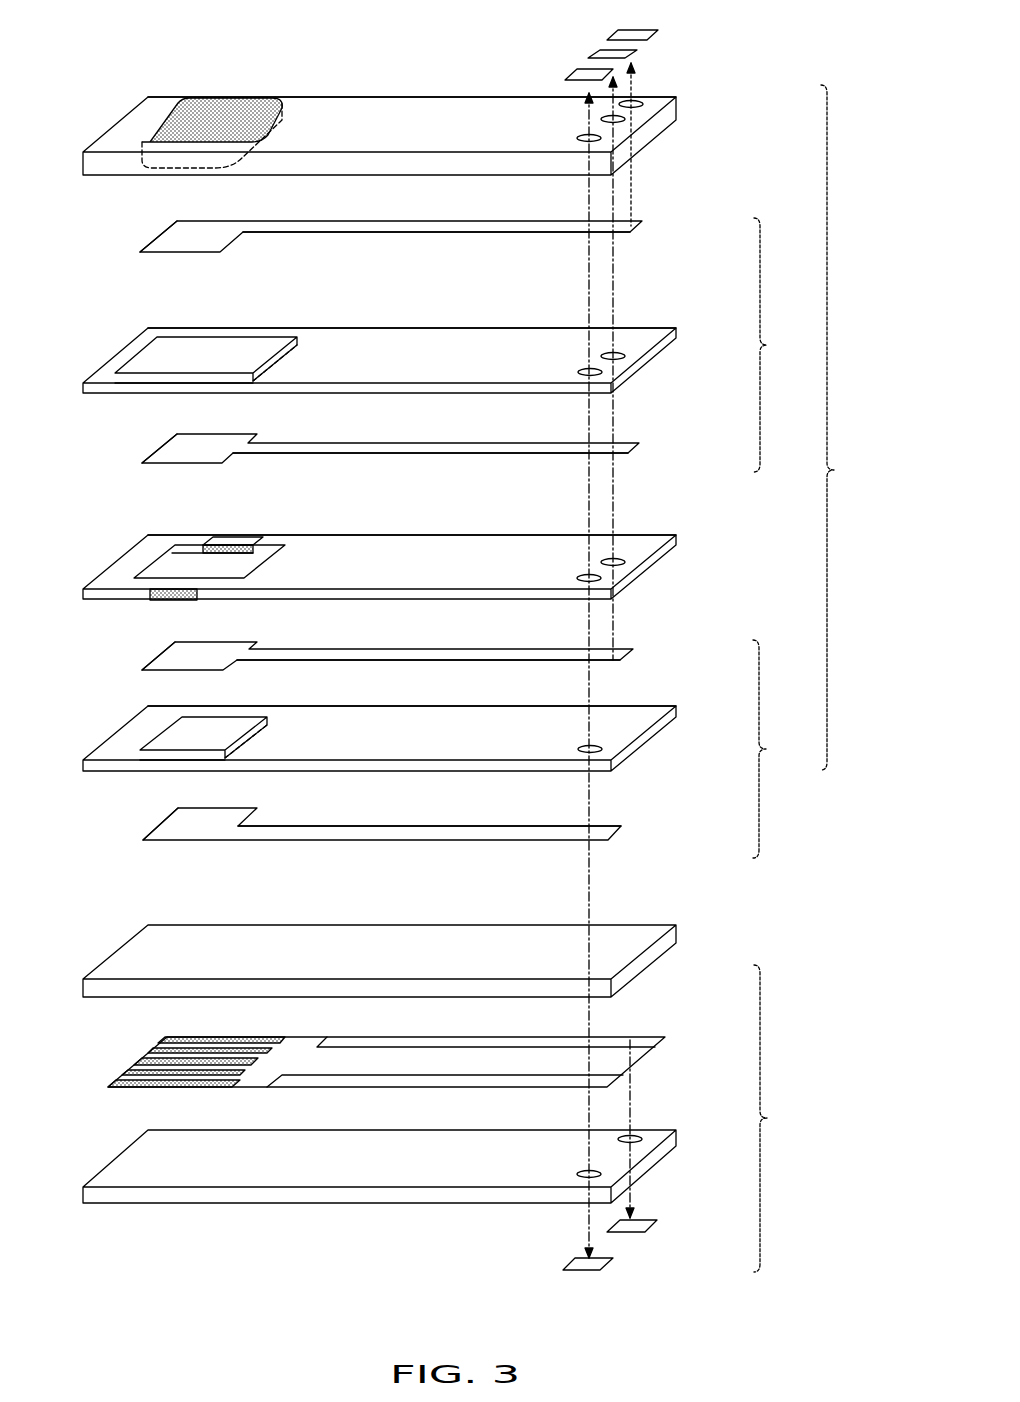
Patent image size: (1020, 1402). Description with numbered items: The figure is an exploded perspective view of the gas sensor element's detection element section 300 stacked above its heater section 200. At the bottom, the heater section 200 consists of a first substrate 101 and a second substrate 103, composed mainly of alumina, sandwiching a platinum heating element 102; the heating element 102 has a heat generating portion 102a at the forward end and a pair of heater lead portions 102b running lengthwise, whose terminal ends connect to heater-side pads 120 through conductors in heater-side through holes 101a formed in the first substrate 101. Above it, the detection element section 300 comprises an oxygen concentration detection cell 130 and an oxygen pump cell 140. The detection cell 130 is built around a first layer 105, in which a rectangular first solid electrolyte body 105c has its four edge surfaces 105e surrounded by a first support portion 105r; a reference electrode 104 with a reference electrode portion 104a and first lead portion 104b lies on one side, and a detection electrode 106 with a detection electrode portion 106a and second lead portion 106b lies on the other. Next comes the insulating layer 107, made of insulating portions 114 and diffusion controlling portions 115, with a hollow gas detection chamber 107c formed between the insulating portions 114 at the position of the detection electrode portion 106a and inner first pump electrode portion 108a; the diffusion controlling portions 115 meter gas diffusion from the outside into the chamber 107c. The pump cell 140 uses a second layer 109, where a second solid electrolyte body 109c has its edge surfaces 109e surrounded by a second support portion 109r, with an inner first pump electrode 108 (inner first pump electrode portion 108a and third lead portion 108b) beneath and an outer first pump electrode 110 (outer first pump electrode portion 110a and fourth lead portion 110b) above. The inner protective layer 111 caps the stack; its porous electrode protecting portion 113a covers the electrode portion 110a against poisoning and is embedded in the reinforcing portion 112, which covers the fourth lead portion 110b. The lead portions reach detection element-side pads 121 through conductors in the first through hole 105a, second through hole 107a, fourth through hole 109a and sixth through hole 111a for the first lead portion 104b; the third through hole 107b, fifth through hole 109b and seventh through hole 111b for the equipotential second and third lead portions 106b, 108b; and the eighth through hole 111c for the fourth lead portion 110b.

The first substrate 101 is at (671, 1186).
The heater-side through holes 101a is at (594, 1172).
The heating element 102 is at (671, 1067).
The heat generating portion 102a is at (150, 1055).
The heater lead portions 102b is at (422, 1080).
The second substrate 103 is at (673, 977).
The reference electrode 104 is at (644, 839).
The reference electrode portion 104a is at (152, 826).
The first lead portion 104b is at (430, 840).
The first layer 105 is at (675, 748).
The first through hole 105a is at (580, 752).
The first solid electrolyte body 105c is at (172, 735).
The edge surfaces of the first solid electrolyte body 105e is at (255, 728).
The first support portion 105r is at (440, 720).
The detection electrode 106 is at (661, 660).
The detection electrode portion 106a is at (180, 648).
The second lead portion 106b is at (430, 660).
The insulating layer 107 is at (670, 588).
The second through hole 107a is at (583, 582).
The third through hole 107b is at (619, 560).
The gas detection chamber 107c is at (268, 556).
The inner first pump electrode 108 is at (666, 453).
The inner first pump electrode portion 108a is at (152, 452).
The third lead portion 108b is at (440, 450).
The second layer 109 is at (677, 366).
The fourth through hole 109a is at (580, 375).
The fifth through hole 109b is at (618, 355).
The second solid electrolyte body 109c is at (215, 350).
The edge surfaces of the second solid electrolyte body 109e is at (282, 350).
The second support portion 109r is at (420, 345).
The outer first pump electrode 110 is at (673, 231).
The outer first pump electrode portion 110a is at (170, 240).
The fourth lead portion 110b is at (430, 232).
The inner protective layer 111 is at (679, 156).
The sixth through hole 111a is at (580, 140).
The seventh through hole 111b is at (626, 119).
The eighth through hole 111c is at (638, 103).
The reinforcing portion 112 is at (362, 100).
The electrode protecting portion 113a is at (207, 110).
The insulating portions 114 is at (413, 548).
The diffusion controlling portions 115 is at (173, 583).
The heater-side pads 120 is at (605, 1266).
The detection element-side pads 121 is at (610, 36).
The oxygen concentration detection cell 130 is at (780, 749).
The oxygen pump cell 140 is at (779, 345).
The heater section 200 is at (783, 1118).
The detection element section 300 is at (852, 427).